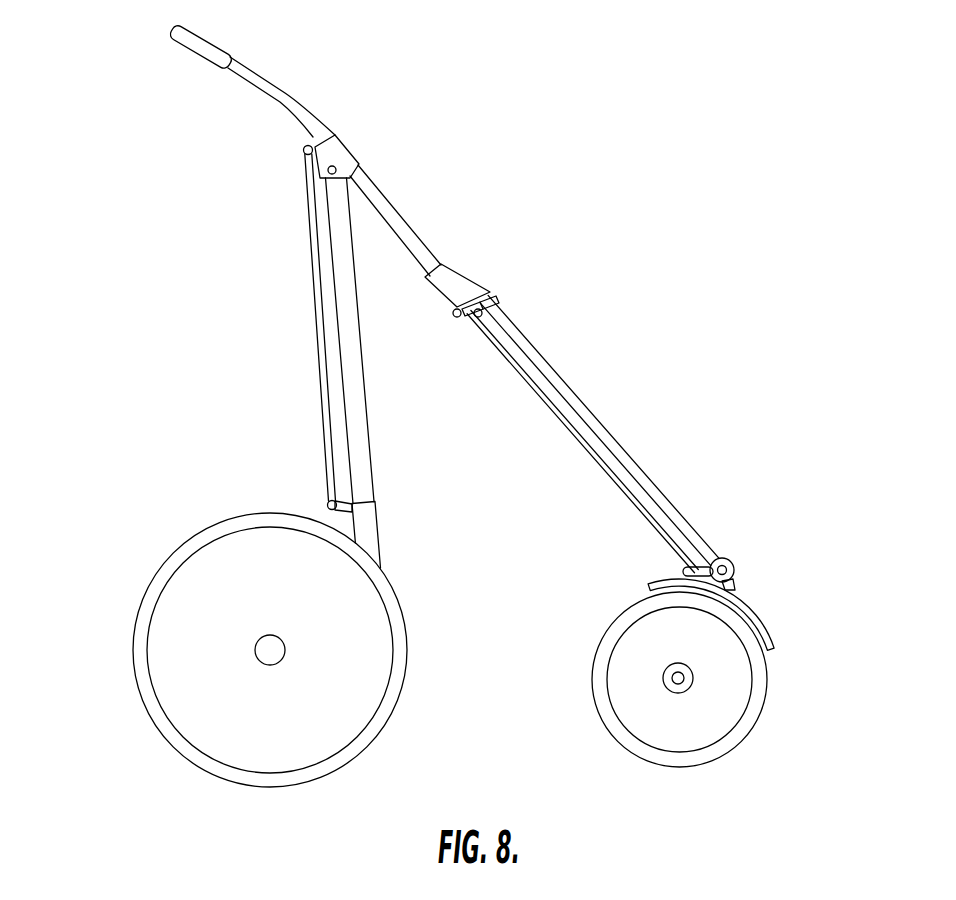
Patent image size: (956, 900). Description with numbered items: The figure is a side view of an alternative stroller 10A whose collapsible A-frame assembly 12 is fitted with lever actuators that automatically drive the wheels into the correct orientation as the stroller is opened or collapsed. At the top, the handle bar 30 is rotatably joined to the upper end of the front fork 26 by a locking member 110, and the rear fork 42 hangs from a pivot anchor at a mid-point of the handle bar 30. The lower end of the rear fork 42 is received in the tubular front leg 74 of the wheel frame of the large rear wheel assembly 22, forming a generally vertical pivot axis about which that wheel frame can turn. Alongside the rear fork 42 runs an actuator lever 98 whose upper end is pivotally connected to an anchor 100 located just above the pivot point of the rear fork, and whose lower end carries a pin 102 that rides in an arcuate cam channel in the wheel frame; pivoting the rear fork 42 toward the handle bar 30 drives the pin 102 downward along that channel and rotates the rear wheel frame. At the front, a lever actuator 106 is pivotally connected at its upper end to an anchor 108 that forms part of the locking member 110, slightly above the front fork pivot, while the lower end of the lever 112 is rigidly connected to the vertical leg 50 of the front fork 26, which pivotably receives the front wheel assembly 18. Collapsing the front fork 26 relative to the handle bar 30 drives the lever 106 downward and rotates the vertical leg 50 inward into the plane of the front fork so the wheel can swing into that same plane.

The stroller 10A is at (558, 110).
The handle bar 30 is at (284, 92).
The frame assembly 12 is at (392, 193).
The anchor 100 is at (312, 137).
The actuator lever 98 is at (320, 328).
The rear fork 42 is at (358, 355).
The pin 102 is at (338, 507).
The front leg 74 is at (367, 528).
The rear wheel assembly 22 is at (186, 749).
The anchor 108 is at (455, 305).
The locking member 110 is at (473, 290).
The front fork 26 is at (594, 413).
The lever actuator 106 is at (583, 458).
The lower end of the lever 112 is at (699, 566).
The vertical leg 50 is at (737, 581).
The front wheel assembly 18 is at (695, 755).